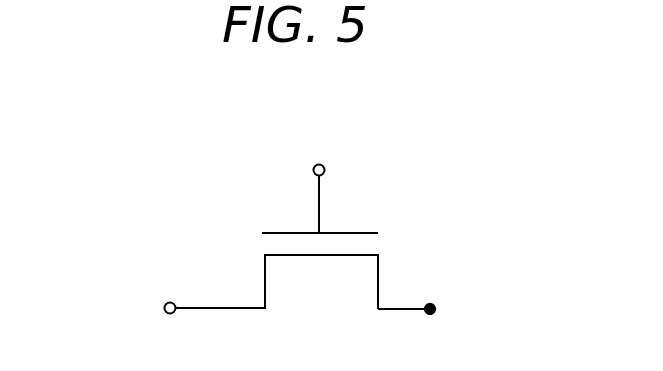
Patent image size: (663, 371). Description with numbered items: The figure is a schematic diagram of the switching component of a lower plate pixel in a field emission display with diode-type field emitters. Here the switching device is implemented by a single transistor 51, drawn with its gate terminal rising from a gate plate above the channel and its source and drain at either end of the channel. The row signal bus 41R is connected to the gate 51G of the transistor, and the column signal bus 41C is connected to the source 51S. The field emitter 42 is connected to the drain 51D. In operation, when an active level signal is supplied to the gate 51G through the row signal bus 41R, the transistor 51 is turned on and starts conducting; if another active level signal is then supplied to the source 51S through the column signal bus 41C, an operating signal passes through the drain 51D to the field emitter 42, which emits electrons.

The transistor 51 is at (320, 273).
The gate 51G is at (351, 189).
The source 51S is at (205, 291).
The drain 51D is at (421, 292).
The row signal bus 41R is at (319, 156).
The column signal bus 41C is at (150, 308).
The field emitter 42 is at (445, 309).